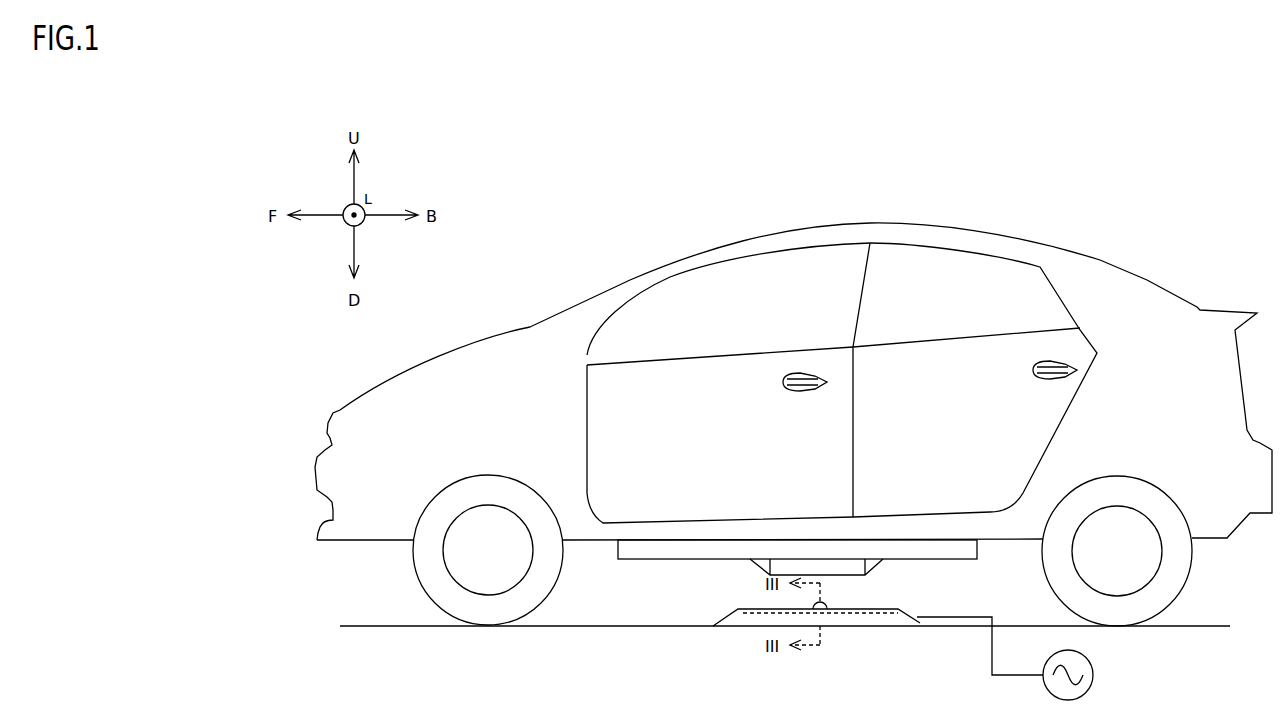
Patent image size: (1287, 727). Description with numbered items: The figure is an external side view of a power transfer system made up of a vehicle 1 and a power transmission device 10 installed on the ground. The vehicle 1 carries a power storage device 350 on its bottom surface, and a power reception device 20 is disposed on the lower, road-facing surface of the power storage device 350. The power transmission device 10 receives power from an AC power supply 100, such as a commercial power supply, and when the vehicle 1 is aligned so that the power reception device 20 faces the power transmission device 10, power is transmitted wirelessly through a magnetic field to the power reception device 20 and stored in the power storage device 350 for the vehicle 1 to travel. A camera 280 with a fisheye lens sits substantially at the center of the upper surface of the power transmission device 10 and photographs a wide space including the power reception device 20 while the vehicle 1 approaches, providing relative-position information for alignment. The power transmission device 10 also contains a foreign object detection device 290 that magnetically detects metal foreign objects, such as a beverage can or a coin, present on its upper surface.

The vehicle 1 is at (961, 190).
The power storage device 350 is at (653, 548).
The power reception device 20 is at (738, 584).
The camera 280 is at (827, 608).
The foreign object detection device 290 is at (852, 613).
The power transmission device 10 is at (908, 642).
The AC power supply 100 is at (1093, 671).